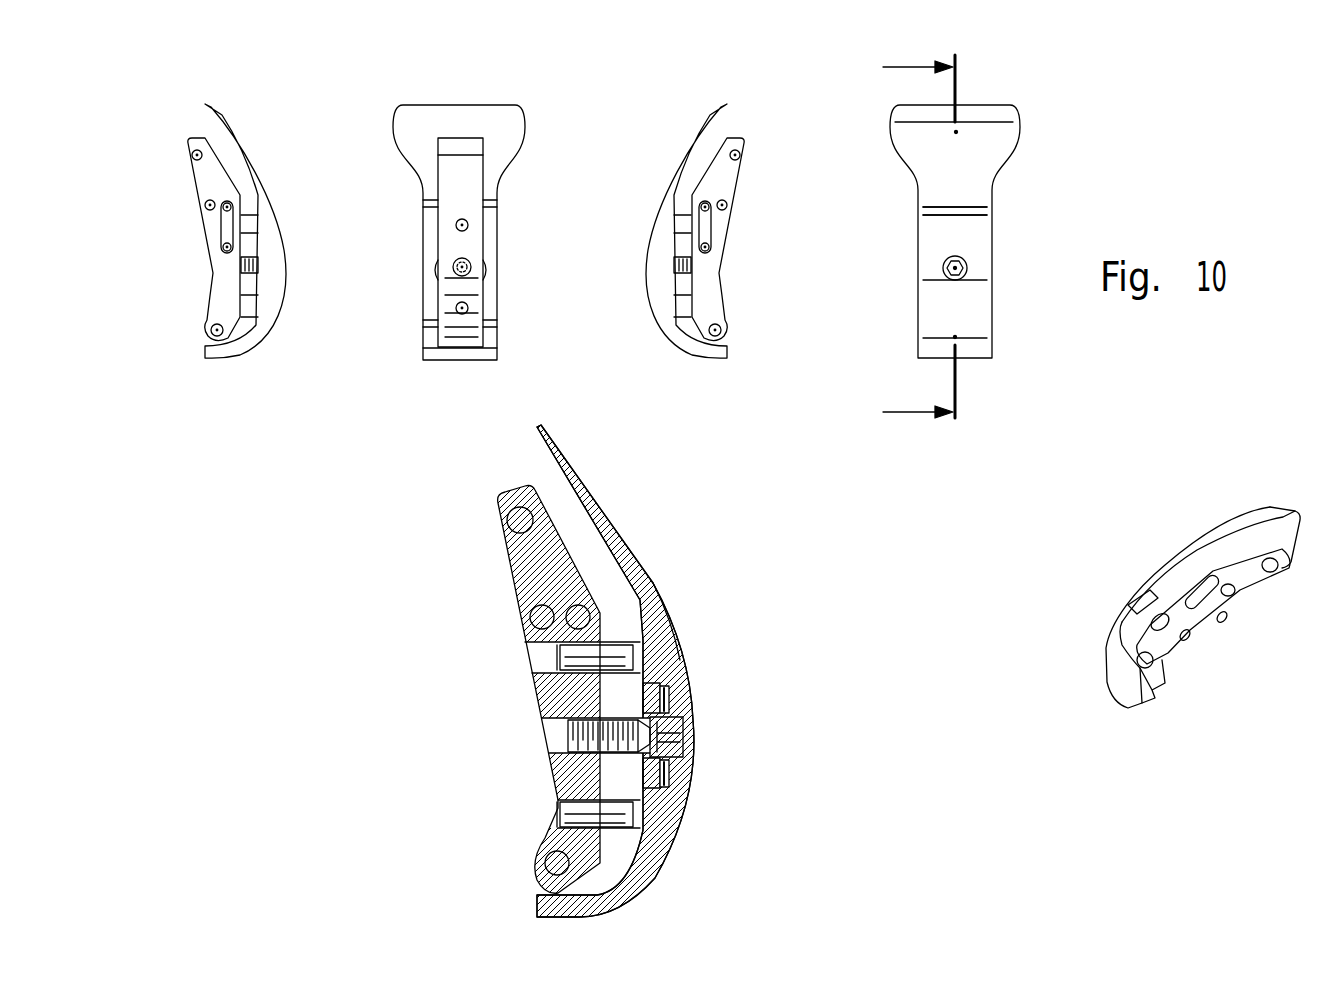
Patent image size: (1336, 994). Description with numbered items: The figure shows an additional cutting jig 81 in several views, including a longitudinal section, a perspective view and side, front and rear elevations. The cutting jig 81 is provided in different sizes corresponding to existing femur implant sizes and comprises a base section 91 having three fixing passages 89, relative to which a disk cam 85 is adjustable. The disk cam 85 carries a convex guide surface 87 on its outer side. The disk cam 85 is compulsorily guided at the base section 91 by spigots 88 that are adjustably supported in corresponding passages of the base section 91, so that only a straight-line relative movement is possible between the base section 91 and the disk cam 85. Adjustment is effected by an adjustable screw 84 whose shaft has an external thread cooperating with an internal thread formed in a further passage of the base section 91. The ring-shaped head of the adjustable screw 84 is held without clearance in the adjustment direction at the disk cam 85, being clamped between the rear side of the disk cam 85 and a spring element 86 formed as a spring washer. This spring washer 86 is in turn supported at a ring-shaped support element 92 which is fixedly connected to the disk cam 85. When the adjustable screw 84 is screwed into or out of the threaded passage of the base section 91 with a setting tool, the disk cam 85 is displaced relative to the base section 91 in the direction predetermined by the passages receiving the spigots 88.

The additional cutting jig 81 is at (728, 486).
The adjustable screw 84 is at (568, 738).
The disk cam 85 is at (273, 250).
The spring element 86 is at (678, 697).
The convex guide surface 87 is at (936, 232).
The spigots 88 is at (556, 658).
The fixing passages 89 is at (507, 518).
The base section 91 is at (222, 263).
The support element 92 is at (678, 780).